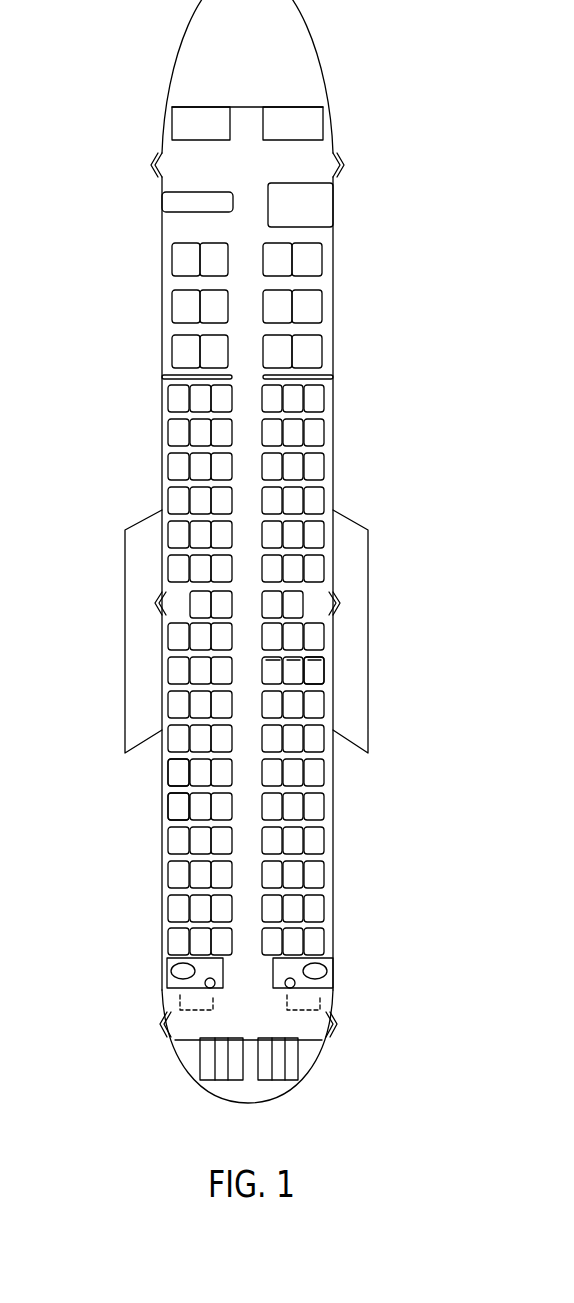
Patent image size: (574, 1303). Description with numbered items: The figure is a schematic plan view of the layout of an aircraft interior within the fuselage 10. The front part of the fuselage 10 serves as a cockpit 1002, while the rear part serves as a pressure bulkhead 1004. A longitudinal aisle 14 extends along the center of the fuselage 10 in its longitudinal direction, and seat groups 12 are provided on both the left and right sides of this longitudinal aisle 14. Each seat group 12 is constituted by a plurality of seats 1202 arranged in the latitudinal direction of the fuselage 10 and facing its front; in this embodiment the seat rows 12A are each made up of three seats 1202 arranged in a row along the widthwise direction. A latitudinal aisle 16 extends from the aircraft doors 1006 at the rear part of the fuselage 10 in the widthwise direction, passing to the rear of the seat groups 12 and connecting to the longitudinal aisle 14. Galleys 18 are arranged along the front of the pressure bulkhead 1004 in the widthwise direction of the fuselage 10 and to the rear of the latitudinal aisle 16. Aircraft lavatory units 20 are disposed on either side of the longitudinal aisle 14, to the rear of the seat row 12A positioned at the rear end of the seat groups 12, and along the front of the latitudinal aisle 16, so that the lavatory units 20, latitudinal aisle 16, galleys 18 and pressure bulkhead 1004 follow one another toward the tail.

The fuselage 10 is at (305, 50).
The cockpit 1002 is at (278, 78).
The pressure bulkhead 1004 is at (275, 1103).
The aircraft doors 1006 is at (165, 1018).
The seat groups 12 is at (160, 433).
The seat rows 12A is at (168, 772).
The seats 1202 is at (272, 665).
The longitudinal aisle 14 is at (247, 484).
The latitudinal aisle 16 is at (250, 1022).
The galleys 18 is at (270, 1048).
The aircraft lavatory units 20 is at (205, 969).